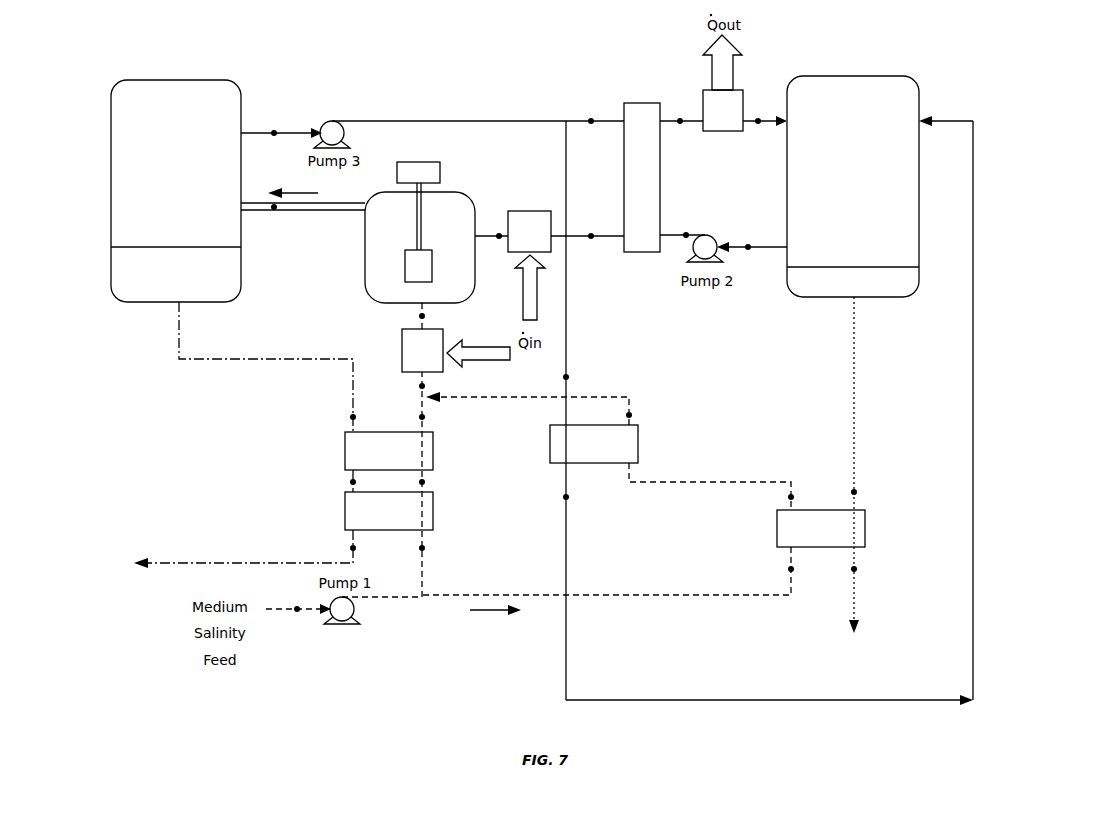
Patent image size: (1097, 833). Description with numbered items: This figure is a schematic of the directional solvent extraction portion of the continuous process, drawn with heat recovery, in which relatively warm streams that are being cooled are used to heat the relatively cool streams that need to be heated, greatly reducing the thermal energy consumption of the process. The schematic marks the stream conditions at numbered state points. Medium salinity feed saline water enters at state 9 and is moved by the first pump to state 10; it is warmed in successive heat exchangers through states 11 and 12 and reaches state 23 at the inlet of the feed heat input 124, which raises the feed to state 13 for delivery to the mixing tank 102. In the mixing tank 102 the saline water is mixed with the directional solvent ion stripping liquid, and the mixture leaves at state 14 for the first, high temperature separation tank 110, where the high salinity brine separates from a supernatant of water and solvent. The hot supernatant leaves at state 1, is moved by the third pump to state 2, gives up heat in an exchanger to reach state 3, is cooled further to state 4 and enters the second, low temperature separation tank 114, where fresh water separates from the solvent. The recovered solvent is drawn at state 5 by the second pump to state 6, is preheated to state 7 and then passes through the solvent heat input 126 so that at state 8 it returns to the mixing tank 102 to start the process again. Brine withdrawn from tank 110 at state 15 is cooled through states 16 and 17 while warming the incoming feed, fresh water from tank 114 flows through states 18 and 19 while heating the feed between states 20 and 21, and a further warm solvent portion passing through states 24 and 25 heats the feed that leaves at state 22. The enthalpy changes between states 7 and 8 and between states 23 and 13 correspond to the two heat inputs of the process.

The directional solvent stream from high temperature settlement tank to pump 3 (80°C 1 is at (278, 110).
The directional solvent stream entering heat exchanger (80°C) 2 is at (594, 95).
The directional solvent stream leaving heat exchanger (50°C) 3 is at (676, 96).
The cooled directional solvent stream entering low temperature settlement tank (40°C 4 is at (764, 96).
The directional solvent stream from low temperature settlement tank to pump 2 (40°C) 5 is at (752, 222).
The directional solvent stream from pump 2 to heat exchanger (40°C) 6 is at (688, 211).
The state 7 is at (594, 214).
The state 8 is at (499, 226).
The medium salinity feed stream (25°C) 9 is at (300, 635).
The feed stream after pump 1 (25°C) 10 is at (459, 548).
The feed stream after first heat exchanger (40°C) 11 is at (459, 482).
The feed stream after second heat exchanger (70°C) 12 is at (459, 417).
The state 13 is at (379, 316).
The mixture stream from mixing tank to high temperature settlement tank (80°C) 14 is at (278, 230).
The concentrated brine stream from high temperature settlement tank (80°C) 15 is at (314, 417).
The concentrated brine stream after heat exchanger (50°C) 16 is at (314, 482).
The concentrated brine product stream (35°C) 17 is at (314, 548).
The fresh water stream from low temperature settlement tank (40°C) 18 is at (892, 492).
The fresh water product stream (40°C) 19 is at (892, 569).
The feed stream entering fresh water heat exchanger (25°C) 20 is at (754, 569).
The feed stream leaving fresh water heat exchanger (30°C) 21 is at (754, 497).
The feed stream leaving solvent heat exchanger (70°C) 22 is at (668, 415).
The state 23 is at (459, 385).
The directional solvent bypass stream entering heat exchanger (80°C) 24 is at (605, 377).
The directional solvent bypass stream leaving heat exchanger (40°C) 25 is at (603, 497).
The mixing tank 102 is at (365, 290).
The first separation tank 110 is at (111, 110).
The second separation tank 114 is at (919, 106).
The feed heat input 124 is at (402, 350).
The solvent heat input 126 is at (533, 211).